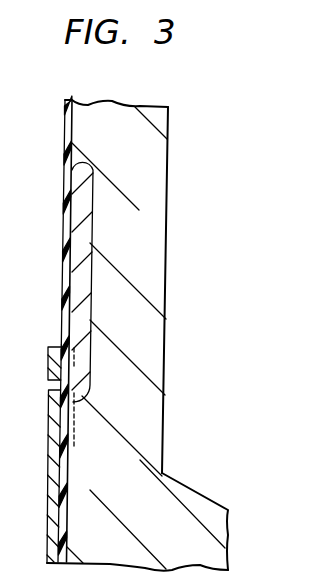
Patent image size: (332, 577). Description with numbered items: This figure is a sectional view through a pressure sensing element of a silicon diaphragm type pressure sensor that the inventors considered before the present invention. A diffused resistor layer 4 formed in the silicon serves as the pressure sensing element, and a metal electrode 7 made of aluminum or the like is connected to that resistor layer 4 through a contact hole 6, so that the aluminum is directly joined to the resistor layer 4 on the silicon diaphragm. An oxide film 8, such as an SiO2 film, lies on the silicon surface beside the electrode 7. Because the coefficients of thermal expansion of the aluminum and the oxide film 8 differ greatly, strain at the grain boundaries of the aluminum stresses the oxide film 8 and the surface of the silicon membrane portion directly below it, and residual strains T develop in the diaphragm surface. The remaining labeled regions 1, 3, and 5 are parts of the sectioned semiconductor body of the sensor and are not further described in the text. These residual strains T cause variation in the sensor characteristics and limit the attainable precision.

The base / substrate body 1 is at (216, 528).
The n-type semiconductor body 3 is at (153, 242).
The diffused resistor layer 4 is at (80, 191).
The thin surface layer (upper) 5 is at (88, 127).
The contact hole 6 is at (55, 378).
The metal electrode 7 is at (51, 425).
The oxide film 8 is at (62, 520).
The residual strain T is at (66, 357).